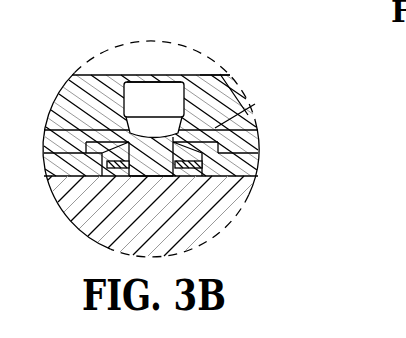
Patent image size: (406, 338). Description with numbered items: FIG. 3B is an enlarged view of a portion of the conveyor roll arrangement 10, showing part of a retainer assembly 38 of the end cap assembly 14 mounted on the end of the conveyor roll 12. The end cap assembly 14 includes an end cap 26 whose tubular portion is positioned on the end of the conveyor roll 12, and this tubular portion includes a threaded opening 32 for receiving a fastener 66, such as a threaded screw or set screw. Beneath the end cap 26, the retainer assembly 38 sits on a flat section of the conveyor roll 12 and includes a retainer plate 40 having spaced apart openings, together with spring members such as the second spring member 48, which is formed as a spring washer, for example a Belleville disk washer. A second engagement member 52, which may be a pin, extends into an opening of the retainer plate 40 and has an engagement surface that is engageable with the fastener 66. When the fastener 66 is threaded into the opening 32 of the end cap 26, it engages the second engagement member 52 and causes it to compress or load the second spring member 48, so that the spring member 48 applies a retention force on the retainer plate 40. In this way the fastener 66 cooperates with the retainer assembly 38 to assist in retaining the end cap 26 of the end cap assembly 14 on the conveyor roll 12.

The conveyor roll arrangement 10 is at (298, 217).
The conveyor roll 12 is at (68, 197).
The end cap assembly 14 is at (249, 49).
The end cap 26 is at (209, 65).
The opening 32 is at (125, 103).
The retainer assembly 38 is at (64, 143).
The retainer plate 40 is at (257, 152).
The second spring member 48 is at (246, 113).
The second engagement member 52 is at (135, 177).
The fastener 66 is at (155, 82).